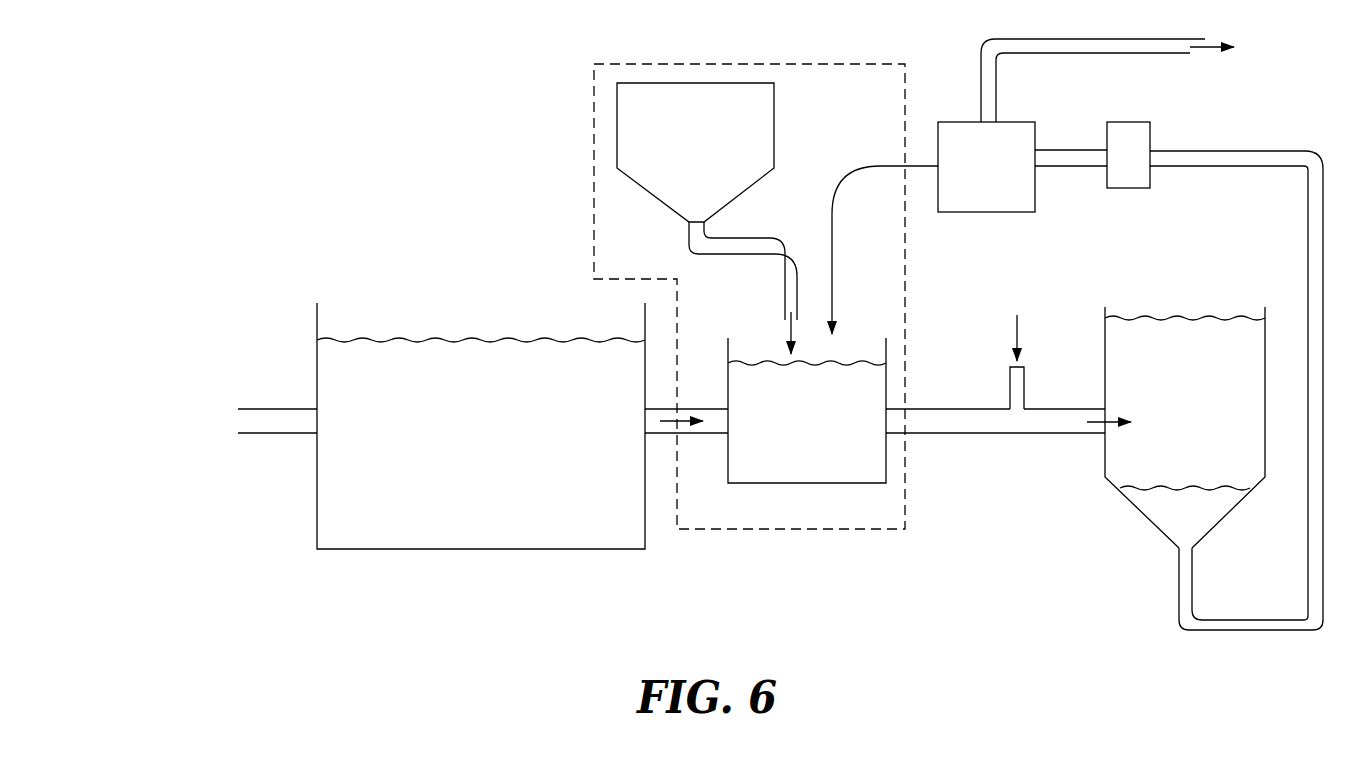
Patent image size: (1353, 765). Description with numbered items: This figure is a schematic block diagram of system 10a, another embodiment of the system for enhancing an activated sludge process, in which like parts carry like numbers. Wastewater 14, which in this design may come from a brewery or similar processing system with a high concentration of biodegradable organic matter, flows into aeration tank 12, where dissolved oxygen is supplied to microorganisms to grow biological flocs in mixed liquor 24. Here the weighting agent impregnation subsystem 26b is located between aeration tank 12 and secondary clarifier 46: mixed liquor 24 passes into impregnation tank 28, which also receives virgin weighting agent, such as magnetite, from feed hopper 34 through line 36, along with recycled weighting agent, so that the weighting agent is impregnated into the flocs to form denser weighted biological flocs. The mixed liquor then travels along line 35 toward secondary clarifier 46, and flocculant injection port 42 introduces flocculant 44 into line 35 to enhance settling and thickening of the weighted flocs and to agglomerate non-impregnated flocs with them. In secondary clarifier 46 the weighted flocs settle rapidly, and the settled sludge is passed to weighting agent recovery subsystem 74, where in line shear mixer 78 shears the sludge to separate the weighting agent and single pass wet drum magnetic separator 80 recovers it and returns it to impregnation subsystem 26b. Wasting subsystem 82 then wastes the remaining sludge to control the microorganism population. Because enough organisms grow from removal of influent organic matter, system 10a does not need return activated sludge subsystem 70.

The system for enhancing an activated sludge process 10a is at (503, 112).
The aeration tank 12 is at (355, 552).
The wastewater 14 is at (238, 421).
The mixed liquor 24 is at (445, 340).
The weighting agent impregnation subsystem 26b is at (893, 104).
The impregnation tank 28 is at (794, 462).
The feed hopper 34 is at (746, 127).
The line 35 is at (985, 423).
The line 36 is at (785, 287).
The flocculant injection port 42 is at (1020, 387).
The flocculant 44 is at (1059, 309).
The secondary clarifier 46 is at (1102, 457).
The return activated sludge subsystem 70 is at (1270, 625).
The weighting agent recovery subsystem 74 is at (1227, 110).
The in line shear mixer 78 is at (1142, 162).
The single pass wet drum magnetic separator 80 is at (1001, 176).
The wasting subsystem 82 is at (1037, 39).